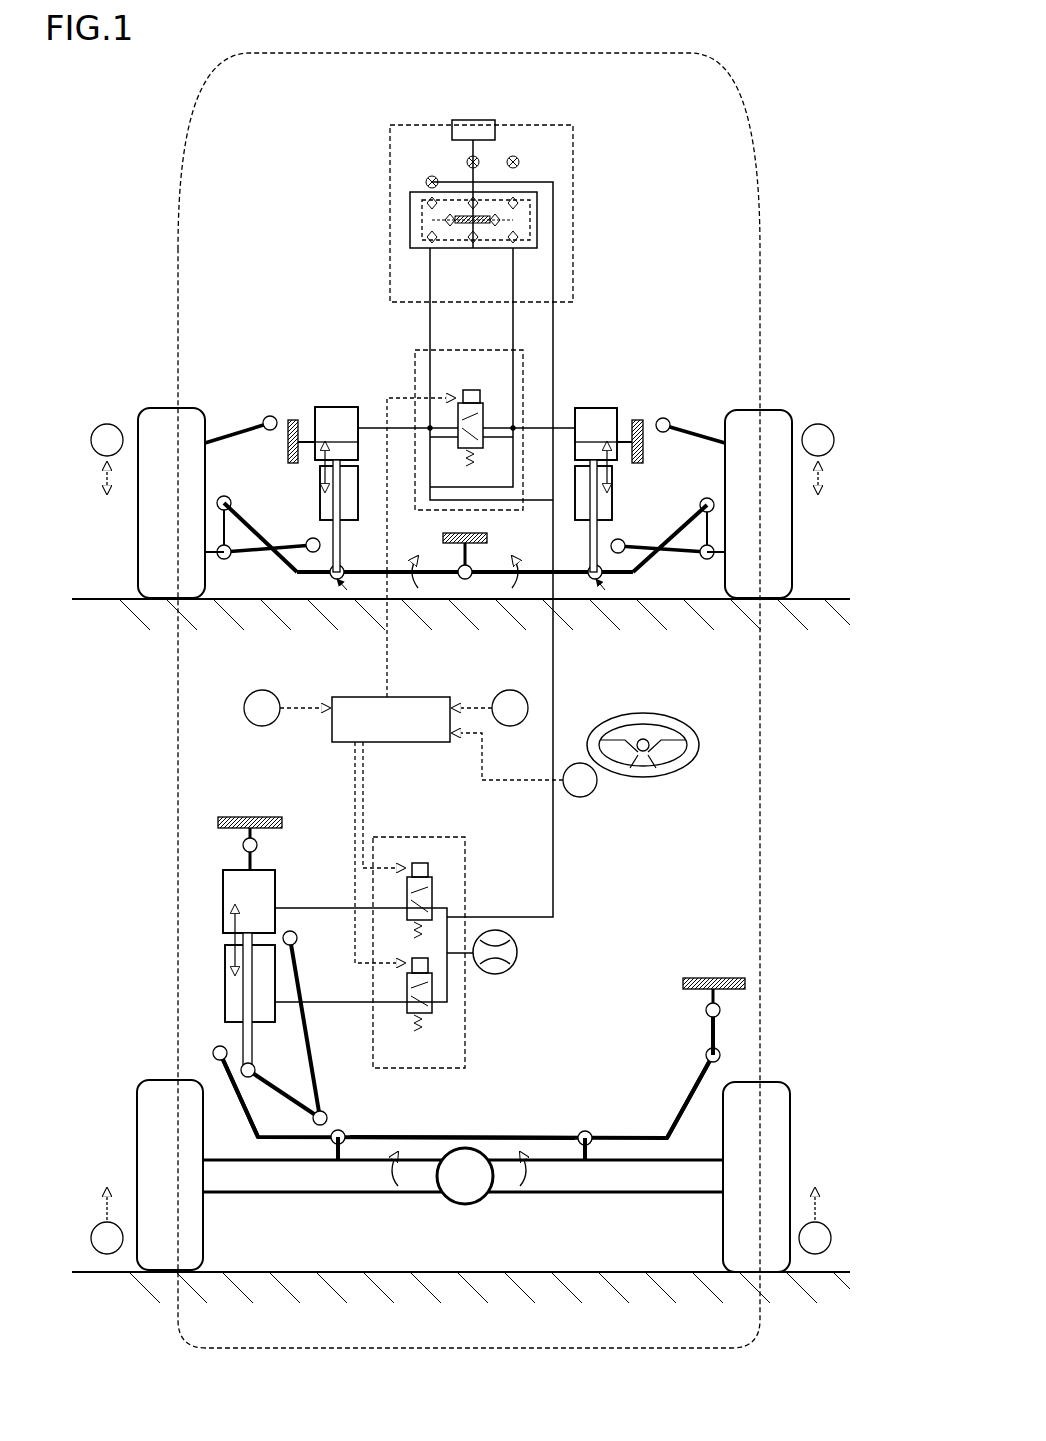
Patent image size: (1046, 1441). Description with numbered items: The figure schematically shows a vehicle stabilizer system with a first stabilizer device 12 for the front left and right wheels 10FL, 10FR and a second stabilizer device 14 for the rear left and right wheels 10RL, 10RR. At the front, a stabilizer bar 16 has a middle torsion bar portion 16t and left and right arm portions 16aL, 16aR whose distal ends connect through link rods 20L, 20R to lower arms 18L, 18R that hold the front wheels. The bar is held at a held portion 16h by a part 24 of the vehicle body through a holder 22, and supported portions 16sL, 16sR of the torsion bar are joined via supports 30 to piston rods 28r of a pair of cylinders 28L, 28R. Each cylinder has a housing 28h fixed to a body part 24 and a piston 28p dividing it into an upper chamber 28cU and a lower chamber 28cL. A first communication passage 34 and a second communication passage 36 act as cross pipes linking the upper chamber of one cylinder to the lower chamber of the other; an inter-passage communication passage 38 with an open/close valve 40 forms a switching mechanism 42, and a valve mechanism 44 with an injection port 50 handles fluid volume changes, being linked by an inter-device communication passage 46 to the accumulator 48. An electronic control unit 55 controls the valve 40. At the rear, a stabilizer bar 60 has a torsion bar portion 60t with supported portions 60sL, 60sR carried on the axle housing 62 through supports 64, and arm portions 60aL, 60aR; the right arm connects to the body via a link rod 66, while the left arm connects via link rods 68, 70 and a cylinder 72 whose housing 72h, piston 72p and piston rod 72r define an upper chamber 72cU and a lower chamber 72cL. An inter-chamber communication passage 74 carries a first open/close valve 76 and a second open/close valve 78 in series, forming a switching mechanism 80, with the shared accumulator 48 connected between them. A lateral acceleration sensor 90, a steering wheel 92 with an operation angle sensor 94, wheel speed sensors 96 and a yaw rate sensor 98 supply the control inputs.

The front left wheel 10FL is at (152, 412).
The front right wheel 10FR is at (778, 412).
The rear left wheel 10RL is at (150, 1085).
The rear right wheel 10RR is at (777, 1090).
The first stabilizer device 12 is at (633, 272).
The second stabilizer device 14 is at (612, 925).
The stabilizer bar 16 is at (515, 590).
The left arm portion 16aL is at (295, 580).
The right arm portion 16aR is at (640, 582).
The held portion 16h is at (478, 585).
The left supported portion 16sL is at (343, 582).
The right supported portion 16sR is at (603, 582).
The torsion bar portion 16t is at (420, 590).
The left lower arm 18L is at (245, 582).
The right lower arm 18R is at (680, 572).
The left link rod 20L is at (222, 528).
The right link rod 20R is at (712, 530).
The holder 22 is at (462, 582).
The part of the vehicle body 24 is at (288, 446).
The left cylinder 28L is at (310, 395).
The right cylinder 28R is at (620, 395).
The lower chamber 28cL is at (322, 505).
The upper chamber 28cU is at (318, 428).
The housing 28h is at (335, 406).
The piston 28p is at (342, 440).
The piston rod 28r is at (340, 530).
The support 30 is at (347, 590).
The first communication passage 34 is at (440, 470).
The second communication passage 36 is at (505, 485).
The inter-passage communication passage 38 is at (515, 415).
The open/close valve 40 is at (470, 402).
The switching mechanism 42 is at (415, 345).
The valve mechanism 44 is at (408, 218).
The inter-device communication passage 46 is at (554, 842).
The accumulator 48 is at (513, 960).
The injection port 50 is at (483, 120).
The electronic control unit 55 is at (340, 725).
The stabilizer bar 60 is at (549, 1148).
The left arm portion 60aL is at (235, 1100).
The right arm portion 60aR is at (690, 1110).
The left supported portion 60sL is at (320, 1148).
The right supported portion 60sR is at (587, 1125).
The torsion bar portion 60t is at (470, 1138).
The axle housing 62 is at (378, 1195).
The support 64 is at (337, 1148).
The link rod 66 is at (722, 1033).
The link rod 68 is at (283, 1082).
The link rod 70 is at (308, 1043).
The cylinder 72 is at (195, 882).
The lower chamber 72cL is at (278, 985).
The upper chamber 72cU is at (276, 895).
The housing 72h is at (222, 905).
The piston 72p is at (222, 940).
The piston rod 72r is at (226, 1003).
The inter-chamber communication passage 74 is at (385, 1005).
The first open/close valve 76 is at (433, 880).
The second open/close valve 78 is at (433, 1012).
The switching mechanism 80 is at (432, 818).
The lateral acceleration sensor 90 is at (510, 727).
The steering wheel 92 is at (680, 720).
The operation angle sensor 94 is at (594, 793).
The wheel speed sensor 96 is at (91, 440).
The yaw rate sensor 98 is at (262, 727).